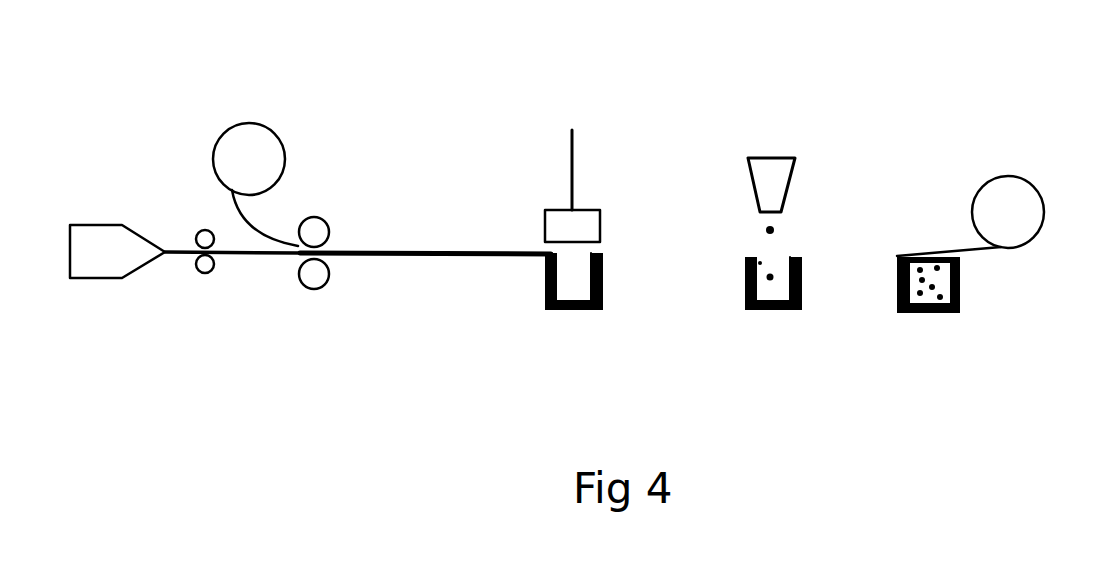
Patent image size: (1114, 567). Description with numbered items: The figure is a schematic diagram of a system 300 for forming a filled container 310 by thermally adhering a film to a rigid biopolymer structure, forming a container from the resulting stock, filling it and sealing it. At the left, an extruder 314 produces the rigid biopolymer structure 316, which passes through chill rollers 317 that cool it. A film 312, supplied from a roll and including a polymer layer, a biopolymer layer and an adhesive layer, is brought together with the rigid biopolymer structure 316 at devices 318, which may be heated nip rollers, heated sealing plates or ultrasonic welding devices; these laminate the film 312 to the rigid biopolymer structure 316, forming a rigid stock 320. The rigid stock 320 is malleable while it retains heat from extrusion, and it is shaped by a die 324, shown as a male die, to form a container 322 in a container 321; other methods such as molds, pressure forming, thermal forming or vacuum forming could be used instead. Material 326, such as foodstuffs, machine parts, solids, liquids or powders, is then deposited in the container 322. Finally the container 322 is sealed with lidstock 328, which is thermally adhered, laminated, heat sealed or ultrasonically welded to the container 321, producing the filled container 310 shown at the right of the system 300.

The system 300 is at (680, 82).
The filled container 310 is at (950, 315).
The film 312 is at (256, 121).
The extruder 314 is at (97, 280).
The rigid biopolymer structure 316 is at (299, 284).
The chill rollers 317 is at (207, 273).
The devices 318 is at (326, 277).
The rigid stock 320 is at (437, 260).
The container 321 is at (603, 272).
The container 322 is at (587, 311).
The die 324 is at (583, 208).
The material 326 is at (785, 218).
The lidstock 328 is at (1033, 240).